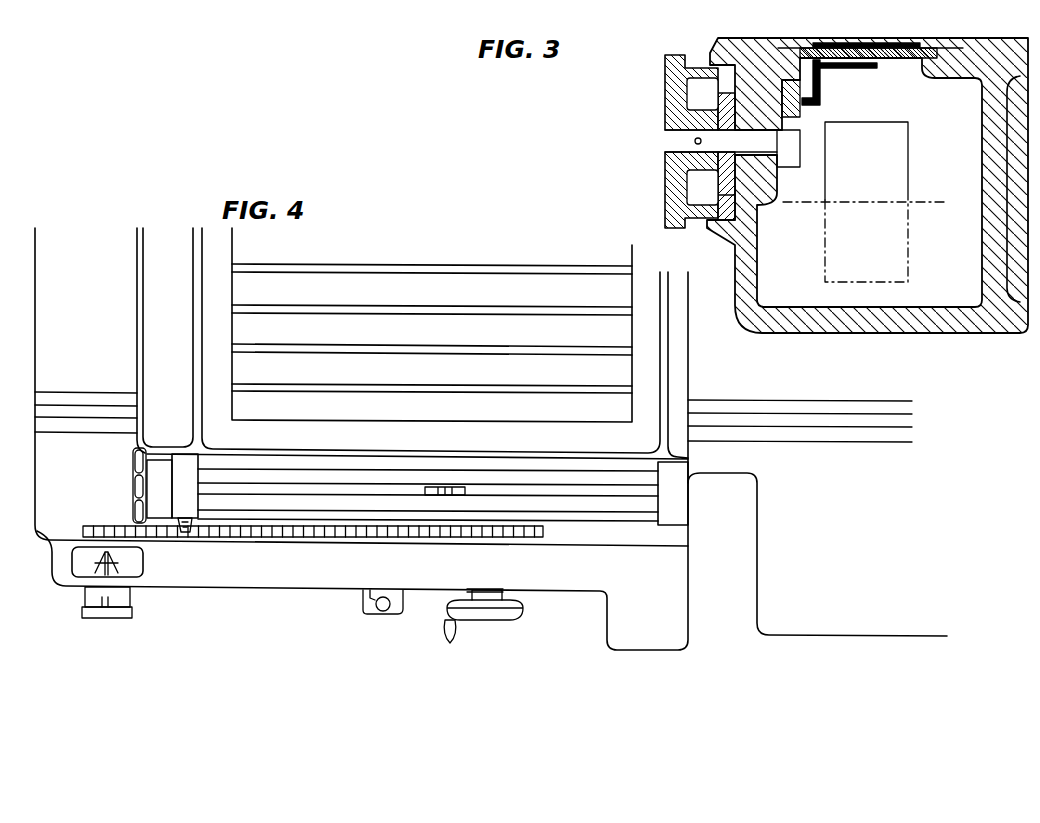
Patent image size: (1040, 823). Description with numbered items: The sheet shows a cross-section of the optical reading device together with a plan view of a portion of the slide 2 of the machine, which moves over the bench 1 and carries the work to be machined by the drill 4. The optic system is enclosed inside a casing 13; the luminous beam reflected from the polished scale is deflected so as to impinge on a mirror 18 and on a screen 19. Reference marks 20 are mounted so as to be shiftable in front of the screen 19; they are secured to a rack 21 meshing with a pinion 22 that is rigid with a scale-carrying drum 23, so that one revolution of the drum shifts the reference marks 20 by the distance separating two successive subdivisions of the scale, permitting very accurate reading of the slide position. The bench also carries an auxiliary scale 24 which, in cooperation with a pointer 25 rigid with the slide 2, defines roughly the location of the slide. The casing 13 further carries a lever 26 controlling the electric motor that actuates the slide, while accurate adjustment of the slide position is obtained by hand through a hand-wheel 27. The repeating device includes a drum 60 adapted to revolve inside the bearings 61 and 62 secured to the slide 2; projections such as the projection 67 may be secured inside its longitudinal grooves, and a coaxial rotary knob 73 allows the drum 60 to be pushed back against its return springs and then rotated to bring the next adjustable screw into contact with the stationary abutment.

In FIG. 4, the bench 1 is at (183, 507).
In FIG. 4, the slide 2 is at (210, 253).
In FIG. 4, the drill 4 is at (182, 479).
In FIG. 4, the casing 13 is at (232, 573).
In FIG. 3, the mirror 18 is at (880, 167).
In FIG. 3, the screen 19 is at (870, 43).
In FIG. 3, the reference marks 20 is at (857, 69).
In FIG. 4, the reference marks 20 is at (95, 562).
In FIG. 3, the rack 21 is at (819, 105).
In FIG. 3, the pinion 22 is at (793, 160).
In FIG. 3, the scale-carrying drum 23 is at (676, 87).
In FIG. 4, the scale-carrying drum 23 is at (122, 612).
In FIG. 4, the auxiliary scale 24 is at (278, 533).
In FIG. 4, the pointer 25 is at (190, 537).
In FIG. 4, the lever 26 is at (370, 592).
In FIG. 4, the hand-wheel 27 is at (520, 613).
In FIG. 4, the drum 60 is at (610, 492).
In FIG. 4, the bearing 61 is at (678, 498).
In FIG. 4, the bearing 62 is at (198, 498).
In FIG. 4, the projection 67 is at (435, 495).
In FIG. 4, the rotary knob 73 is at (133, 480).